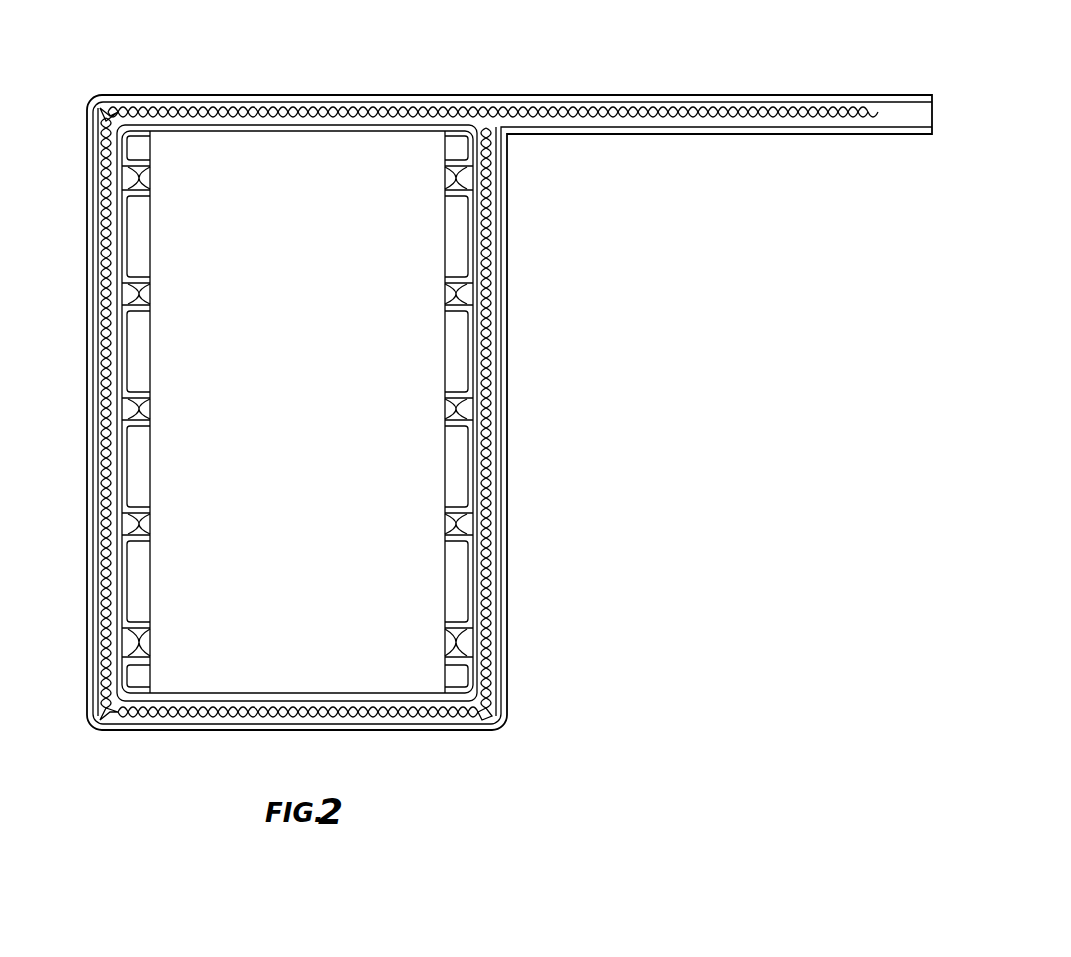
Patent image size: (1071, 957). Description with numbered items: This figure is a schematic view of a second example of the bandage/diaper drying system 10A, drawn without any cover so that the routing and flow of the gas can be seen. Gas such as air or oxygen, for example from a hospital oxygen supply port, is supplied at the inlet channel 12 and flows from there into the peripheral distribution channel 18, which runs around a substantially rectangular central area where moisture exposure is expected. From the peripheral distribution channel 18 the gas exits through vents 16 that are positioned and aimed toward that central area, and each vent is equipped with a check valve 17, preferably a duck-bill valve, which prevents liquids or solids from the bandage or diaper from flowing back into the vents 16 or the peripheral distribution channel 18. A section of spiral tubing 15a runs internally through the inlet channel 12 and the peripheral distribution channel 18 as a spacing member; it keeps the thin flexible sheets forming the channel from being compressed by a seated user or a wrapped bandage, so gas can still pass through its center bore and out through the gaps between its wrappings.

The bandage/diaper drying system 10A is at (874, 70).
The inlet channel 12 is at (728, 100).
The spiral tubing 15a is at (638, 110).
The vents 16 is at (150, 186).
The check valves 17 is at (147, 178).
The peripheral distribution channel 18 is at (100, 180).